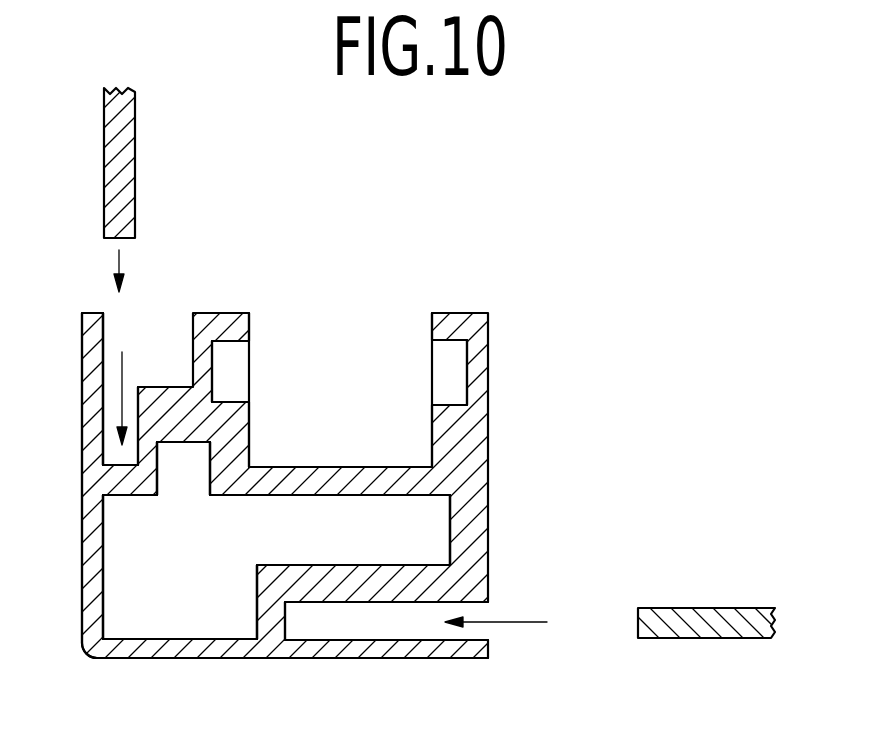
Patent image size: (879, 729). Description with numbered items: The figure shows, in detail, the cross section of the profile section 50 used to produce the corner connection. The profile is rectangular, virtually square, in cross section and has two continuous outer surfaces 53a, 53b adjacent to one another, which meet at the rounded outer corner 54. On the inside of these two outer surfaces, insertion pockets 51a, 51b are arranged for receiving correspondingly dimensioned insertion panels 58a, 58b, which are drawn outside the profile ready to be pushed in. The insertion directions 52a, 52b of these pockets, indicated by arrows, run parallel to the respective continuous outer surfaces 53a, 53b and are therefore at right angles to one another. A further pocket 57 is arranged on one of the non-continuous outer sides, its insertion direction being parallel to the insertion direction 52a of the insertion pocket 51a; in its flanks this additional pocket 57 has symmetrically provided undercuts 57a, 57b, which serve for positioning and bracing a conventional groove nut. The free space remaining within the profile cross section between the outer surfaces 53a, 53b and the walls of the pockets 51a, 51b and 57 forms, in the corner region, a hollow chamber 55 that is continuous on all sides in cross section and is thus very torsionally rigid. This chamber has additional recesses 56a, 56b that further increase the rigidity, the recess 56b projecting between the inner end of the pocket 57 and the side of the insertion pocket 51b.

The profile section 50 is at (520, 318).
The insertion pocket 51a is at (110, 410).
The insertion pocket 51b is at (390, 623).
The insertion direction 52a is at (120, 373).
The insertion direction 52b is at (517, 622).
The continuous outer surface 53a is at (78, 615).
The continuous outer surface 53b is at (200, 660).
The rounded corner 54 is at (88, 660).
The hollow chamber 55 is at (177, 593).
The recess 56a is at (182, 470).
The recess 56b is at (297, 537).
The further pocket 57 is at (360, 407).
The undercut 57a is at (227, 373).
The undercut 57b is at (452, 376).
The insertion panel 58a is at (118, 184).
The insertion panel 58b is at (712, 628).